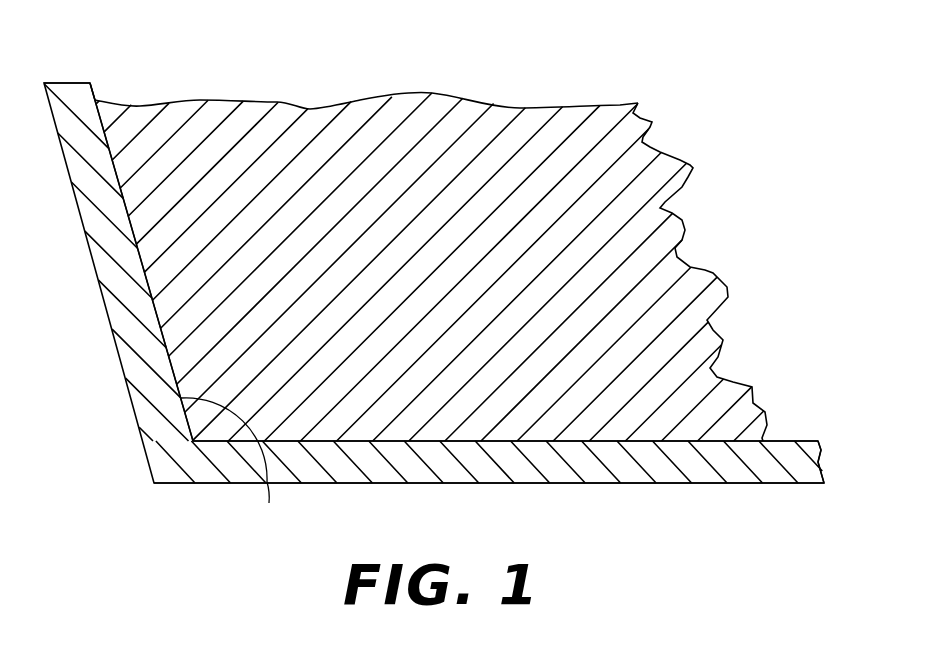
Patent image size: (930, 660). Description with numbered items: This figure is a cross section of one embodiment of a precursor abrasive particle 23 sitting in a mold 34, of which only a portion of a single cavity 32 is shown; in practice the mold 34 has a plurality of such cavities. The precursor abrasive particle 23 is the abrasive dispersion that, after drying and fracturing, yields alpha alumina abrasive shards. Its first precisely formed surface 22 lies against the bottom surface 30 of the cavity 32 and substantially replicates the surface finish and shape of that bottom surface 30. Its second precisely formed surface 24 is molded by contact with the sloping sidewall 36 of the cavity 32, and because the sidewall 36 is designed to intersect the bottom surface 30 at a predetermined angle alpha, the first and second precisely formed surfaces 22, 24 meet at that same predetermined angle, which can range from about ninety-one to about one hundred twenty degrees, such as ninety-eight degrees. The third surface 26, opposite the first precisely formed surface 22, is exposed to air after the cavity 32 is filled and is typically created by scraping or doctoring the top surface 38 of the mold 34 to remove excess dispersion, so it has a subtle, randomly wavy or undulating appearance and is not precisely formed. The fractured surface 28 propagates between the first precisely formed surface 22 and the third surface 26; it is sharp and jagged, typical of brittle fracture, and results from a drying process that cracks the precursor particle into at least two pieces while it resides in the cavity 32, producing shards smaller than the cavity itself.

The first precisely formed surface 22 is at (563, 443).
The precursor abrasive particle 23 is at (568, 123).
The second precisely formed surface 24 is at (156, 313).
The third surface 26 is at (410, 95).
The fractured surface 28 is at (705, 270).
The bottom surface 30 is at (790, 438).
The cavity 32 is at (242, 44).
The mold 34 is at (163, 465).
The sidewall 36 is at (95, 97).
The top surface 38 is at (63, 82).